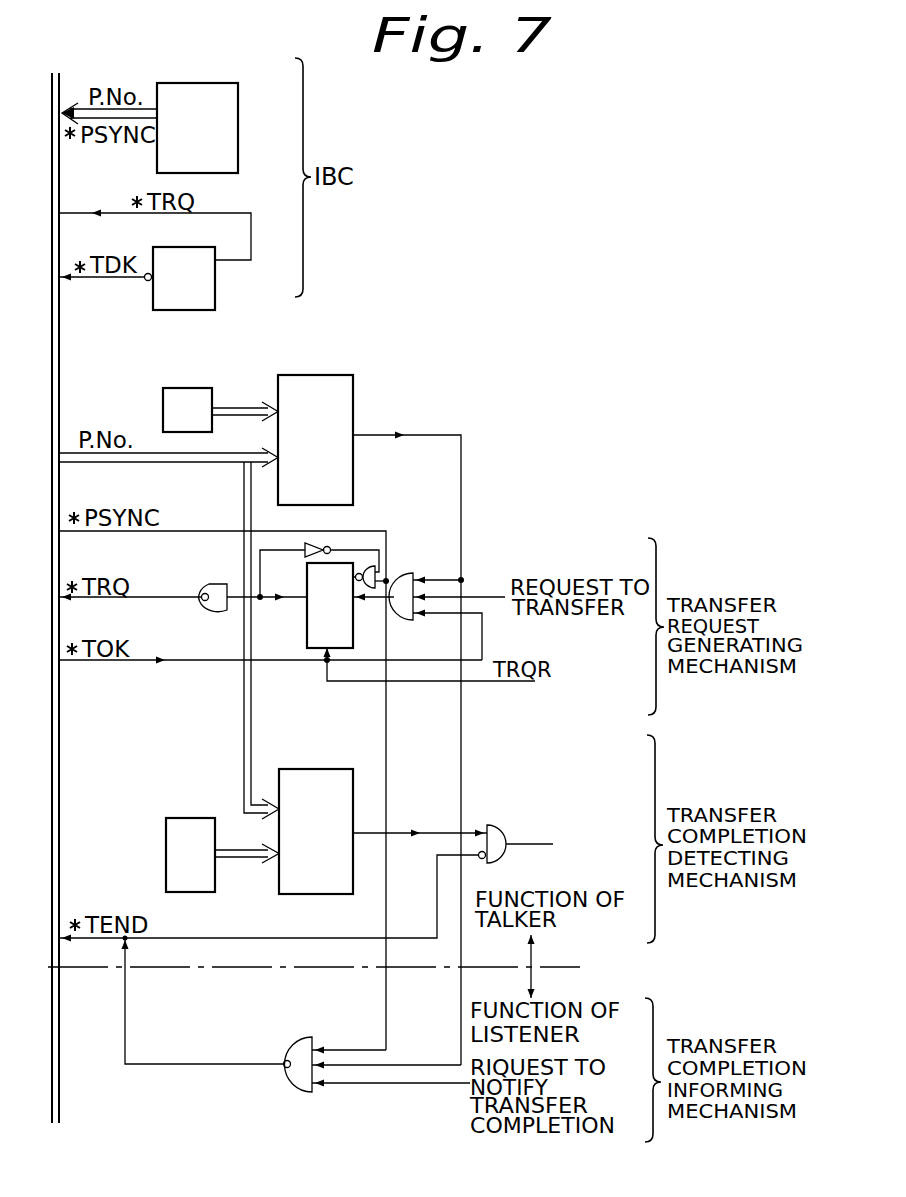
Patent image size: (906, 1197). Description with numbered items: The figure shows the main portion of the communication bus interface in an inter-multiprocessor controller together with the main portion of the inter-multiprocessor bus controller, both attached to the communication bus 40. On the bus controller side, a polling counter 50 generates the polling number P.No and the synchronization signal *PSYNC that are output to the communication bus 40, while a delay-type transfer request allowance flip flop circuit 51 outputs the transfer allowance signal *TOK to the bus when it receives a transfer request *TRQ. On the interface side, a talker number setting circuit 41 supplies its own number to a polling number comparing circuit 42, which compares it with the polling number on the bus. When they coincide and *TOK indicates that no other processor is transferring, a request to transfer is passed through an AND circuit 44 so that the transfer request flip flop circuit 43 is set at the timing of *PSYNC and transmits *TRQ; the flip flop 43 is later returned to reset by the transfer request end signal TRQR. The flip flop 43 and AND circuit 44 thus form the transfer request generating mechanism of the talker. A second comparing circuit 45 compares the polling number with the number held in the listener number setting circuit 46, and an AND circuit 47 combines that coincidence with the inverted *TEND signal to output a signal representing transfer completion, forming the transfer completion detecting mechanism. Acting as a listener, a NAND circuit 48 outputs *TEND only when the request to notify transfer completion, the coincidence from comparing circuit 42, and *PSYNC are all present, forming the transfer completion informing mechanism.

The communication bus 40 is at (59, 372).
The talker number setting circuit 41 is at (163, 404).
The polling number comparing circuit 42 is at (353, 407).
The transfer request flip flop circuit 43 is at (305, 581).
The AND circuit 44 is at (405, 573).
The polling number comparing circuit for transfer completion detection 45 is at (338, 769).
The listener number setting circuit 46 is at (166, 834).
The AND circuit 47 is at (500, 825).
The NAND circuit 48 is at (300, 1037).
The polling counter 50 is at (197, 83).
The transfer request allowance flip flop circuit 51 is at (182, 247).